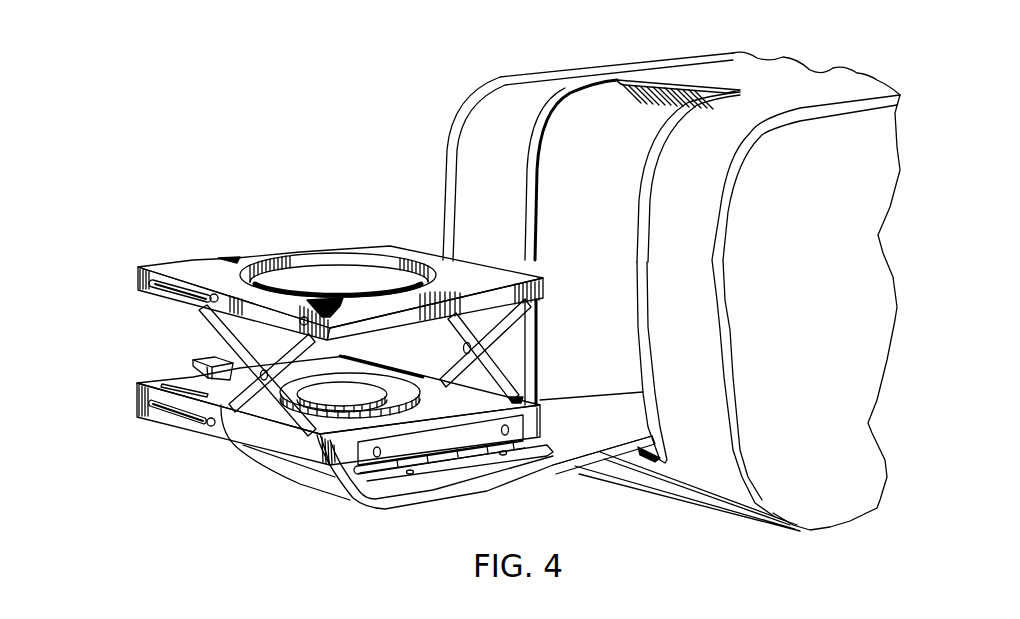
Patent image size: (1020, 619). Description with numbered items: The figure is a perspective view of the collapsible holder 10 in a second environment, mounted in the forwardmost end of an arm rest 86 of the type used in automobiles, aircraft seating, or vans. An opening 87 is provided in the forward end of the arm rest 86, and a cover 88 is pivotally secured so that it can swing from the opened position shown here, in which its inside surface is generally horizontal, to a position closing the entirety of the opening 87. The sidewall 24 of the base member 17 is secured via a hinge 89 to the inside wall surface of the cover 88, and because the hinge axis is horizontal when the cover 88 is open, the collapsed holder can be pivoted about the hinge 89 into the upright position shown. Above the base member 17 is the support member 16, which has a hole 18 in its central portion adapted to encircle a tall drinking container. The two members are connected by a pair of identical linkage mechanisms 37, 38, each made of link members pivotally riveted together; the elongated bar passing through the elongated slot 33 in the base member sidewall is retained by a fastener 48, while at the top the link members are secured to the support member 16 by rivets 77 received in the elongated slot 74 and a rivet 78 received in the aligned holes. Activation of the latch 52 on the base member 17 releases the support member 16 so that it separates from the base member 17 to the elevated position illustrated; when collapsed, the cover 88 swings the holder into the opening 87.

The collapsible holder 10 is at (369, 226).
The support member 16 is at (130, 274).
The base member 17 is at (125, 408).
The hole 18 is at (318, 272).
The sidewall 24 is at (338, 490).
The elongated slot 33 is at (152, 424).
The linkage mechanism 37 is at (242, 403).
The linkage mechanism 38 is at (504, 375).
The fastener 48 is at (208, 428).
The latch 52 is at (196, 349).
The elongated slot 74 is at (160, 295).
The rivet 77 is at (212, 293).
The rivet 78 is at (302, 315).
The arm rest 86 is at (765, 78).
The opening 87 is at (560, 153).
The cover 88 is at (417, 492).
The hinge 89 is at (530, 450).